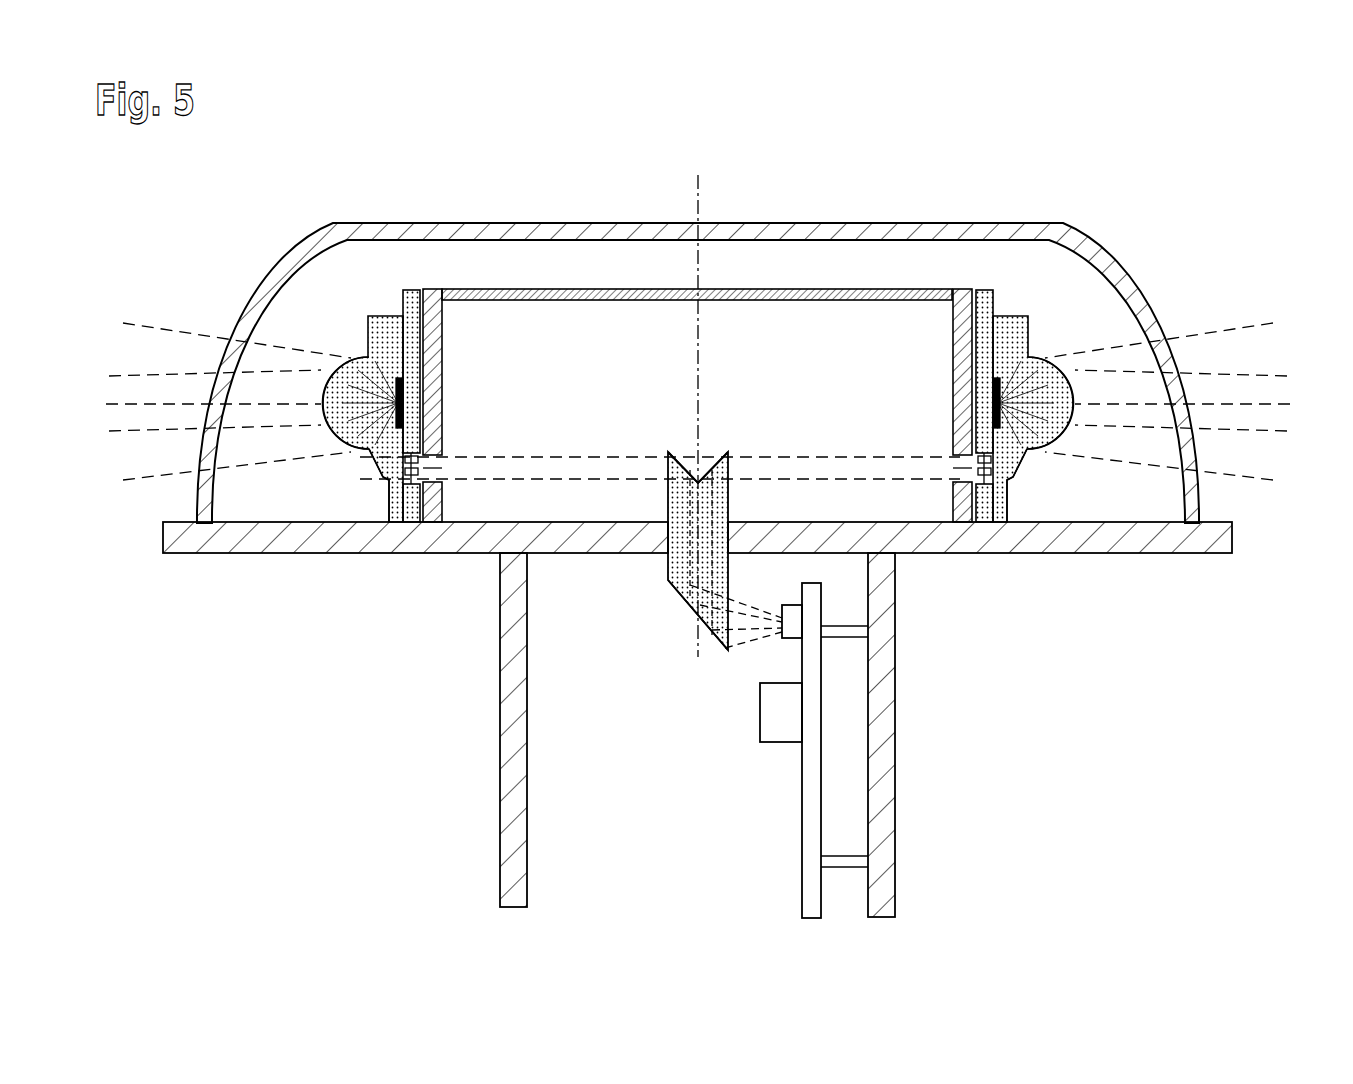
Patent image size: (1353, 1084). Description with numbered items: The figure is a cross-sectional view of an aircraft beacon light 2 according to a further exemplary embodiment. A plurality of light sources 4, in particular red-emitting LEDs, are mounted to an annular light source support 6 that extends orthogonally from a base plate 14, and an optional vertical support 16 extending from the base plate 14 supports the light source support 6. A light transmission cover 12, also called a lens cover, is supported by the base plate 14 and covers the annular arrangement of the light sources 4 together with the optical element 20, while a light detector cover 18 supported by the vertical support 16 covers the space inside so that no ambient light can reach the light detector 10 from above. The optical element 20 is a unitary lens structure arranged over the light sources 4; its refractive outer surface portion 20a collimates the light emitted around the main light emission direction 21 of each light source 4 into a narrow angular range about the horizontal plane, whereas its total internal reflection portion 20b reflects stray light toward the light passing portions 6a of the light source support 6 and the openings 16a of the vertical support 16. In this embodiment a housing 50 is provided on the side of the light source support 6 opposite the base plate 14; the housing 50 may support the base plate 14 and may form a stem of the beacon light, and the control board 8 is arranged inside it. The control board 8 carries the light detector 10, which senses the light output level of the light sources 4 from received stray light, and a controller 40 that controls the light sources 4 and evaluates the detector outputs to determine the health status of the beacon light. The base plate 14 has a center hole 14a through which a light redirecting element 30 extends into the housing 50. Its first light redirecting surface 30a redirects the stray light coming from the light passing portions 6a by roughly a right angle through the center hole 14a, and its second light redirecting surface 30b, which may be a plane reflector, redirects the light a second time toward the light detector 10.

The aircraft beacon light 2 is at (698, 329).
The light sources 4 is at (348, 426).
The light source support 6 is at (697, 342).
The light passing portions 6a is at (418, 465).
The control board 8 is at (802, 823).
The light detector 10 is at (785, 640).
The light transmission cover 12 is at (890, 224).
The base plate 14 is at (748, 568).
The center hole 14a is at (680, 558).
The vertical support 16 is at (697, 342).
The openings 16a is at (437, 473).
The light detector cover 18 is at (525, 290).
The optical element 20 is at (700, 466).
The refractive outer surface portion 20a is at (345, 364).
The total internal reflection portion 20b is at (378, 467).
The main light emission direction 21 is at (152, 400).
The light redirecting element 30 is at (680, 418).
The first light redirecting surface 30a is at (683, 460).
The second light redirecting surface 30b is at (693, 605).
The controller 40 is at (760, 712).
The housing 50 is at (476, 771).